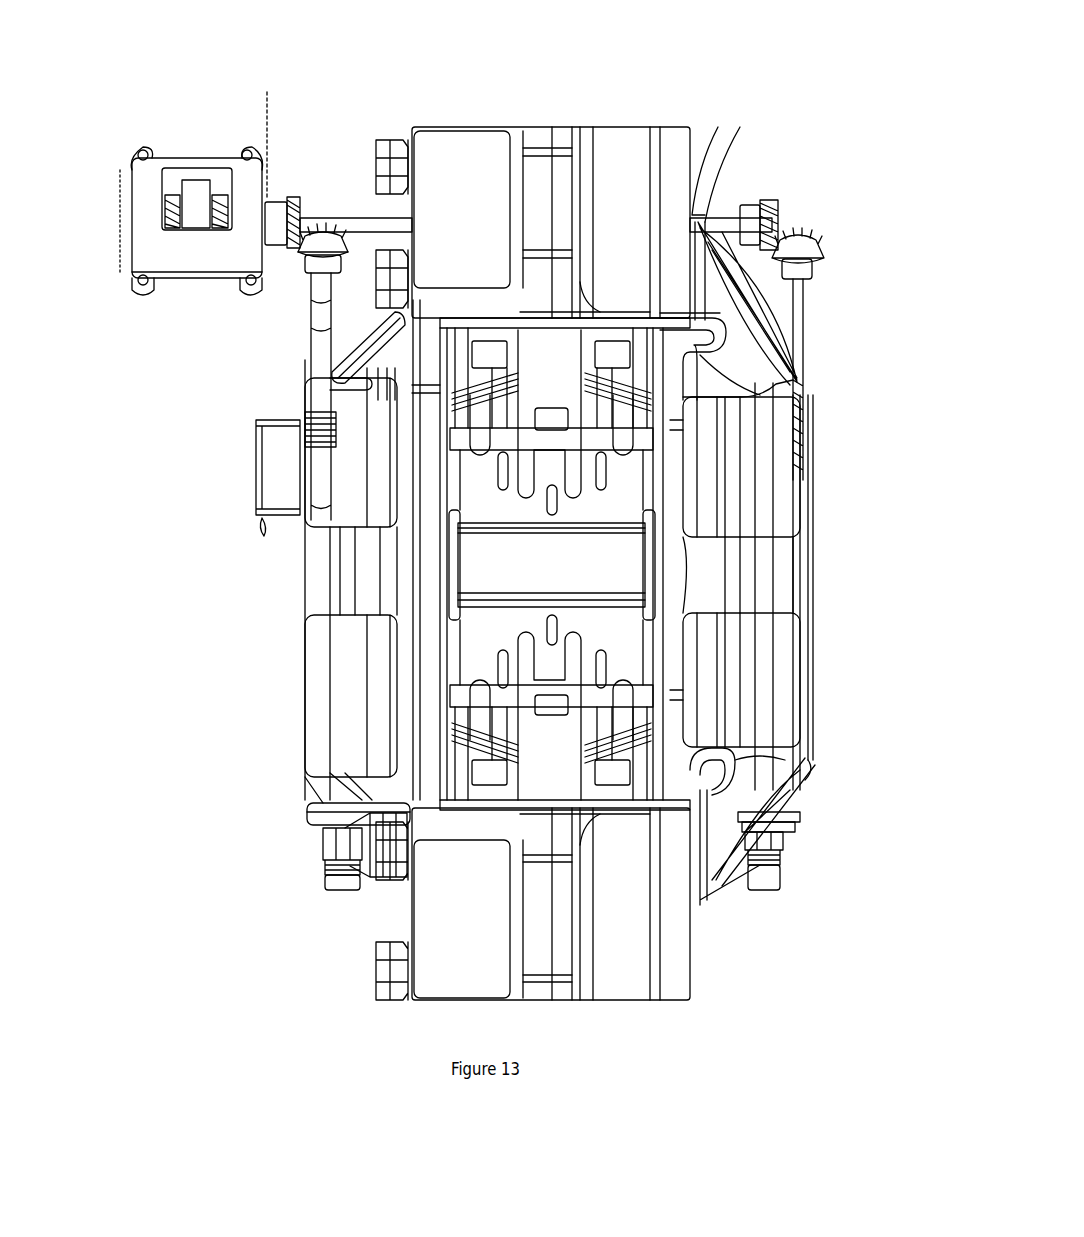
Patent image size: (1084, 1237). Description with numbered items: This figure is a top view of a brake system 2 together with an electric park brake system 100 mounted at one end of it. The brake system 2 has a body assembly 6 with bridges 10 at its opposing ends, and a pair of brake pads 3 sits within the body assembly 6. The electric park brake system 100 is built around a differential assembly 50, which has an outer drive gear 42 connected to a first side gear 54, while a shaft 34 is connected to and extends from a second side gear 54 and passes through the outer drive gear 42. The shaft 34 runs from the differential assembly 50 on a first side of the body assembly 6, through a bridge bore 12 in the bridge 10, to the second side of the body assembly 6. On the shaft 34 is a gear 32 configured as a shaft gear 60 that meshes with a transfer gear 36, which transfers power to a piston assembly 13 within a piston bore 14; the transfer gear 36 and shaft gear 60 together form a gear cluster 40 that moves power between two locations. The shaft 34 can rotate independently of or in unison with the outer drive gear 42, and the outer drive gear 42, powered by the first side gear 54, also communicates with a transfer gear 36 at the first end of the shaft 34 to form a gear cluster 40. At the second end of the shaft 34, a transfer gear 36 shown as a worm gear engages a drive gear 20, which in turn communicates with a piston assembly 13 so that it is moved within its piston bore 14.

The brake system 2 is at (547, 66).
The brake pads 3 is at (632, 781).
The body assembly 6 is at (723, 911).
The bridge 10 is at (617, 195).
The bridge bore 12 is at (702, 213).
The piston assembly 13 is at (504, 595).
The piston bore 14 is at (811, 600).
The drive gear 20 is at (290, 482).
The gear 32 is at (720, 228).
The shaft 34 is at (305, 218).
The transfer gear 36 is at (822, 252).
The gear cluster 40 is at (836, 152).
The outer drive gear 42 is at (508, 153).
The differential assembly 50 is at (165, 324).
The side gear 54 is at (221, 190).
The shaft gear 60 is at (751, 311).
The electric park brake system 100 is at (170, 214).